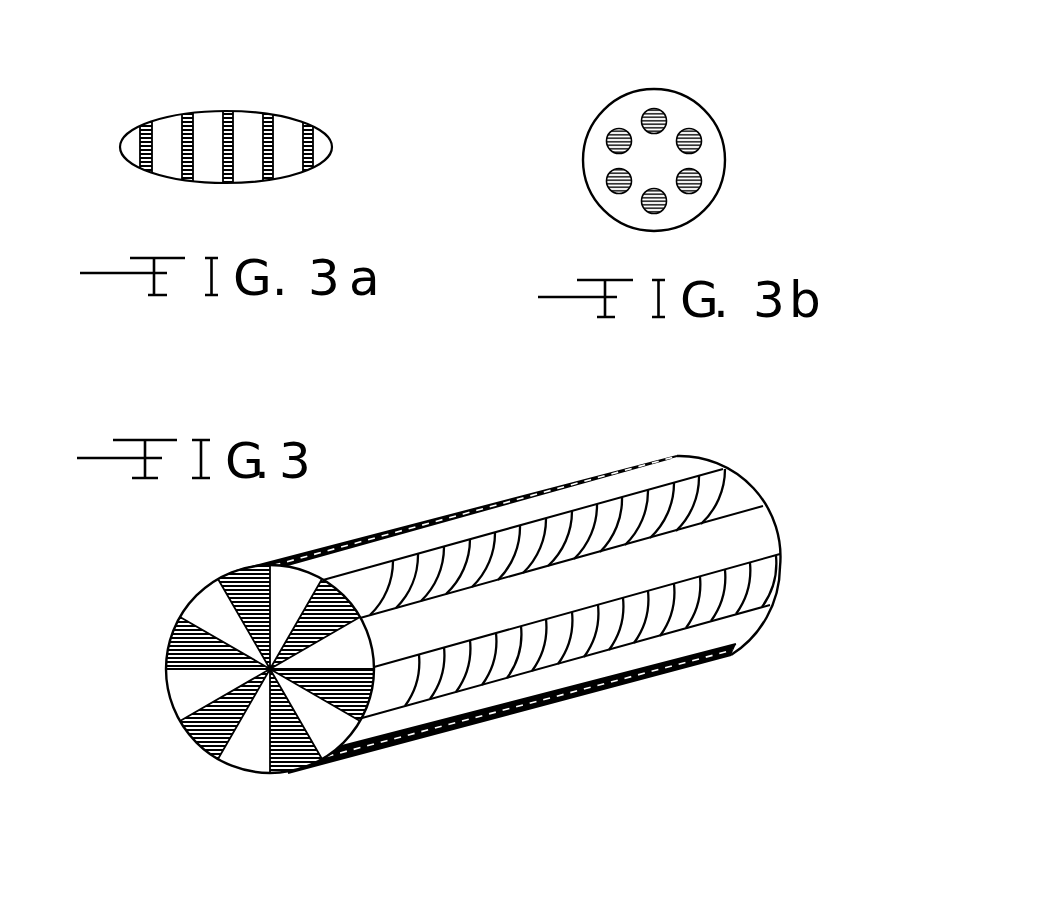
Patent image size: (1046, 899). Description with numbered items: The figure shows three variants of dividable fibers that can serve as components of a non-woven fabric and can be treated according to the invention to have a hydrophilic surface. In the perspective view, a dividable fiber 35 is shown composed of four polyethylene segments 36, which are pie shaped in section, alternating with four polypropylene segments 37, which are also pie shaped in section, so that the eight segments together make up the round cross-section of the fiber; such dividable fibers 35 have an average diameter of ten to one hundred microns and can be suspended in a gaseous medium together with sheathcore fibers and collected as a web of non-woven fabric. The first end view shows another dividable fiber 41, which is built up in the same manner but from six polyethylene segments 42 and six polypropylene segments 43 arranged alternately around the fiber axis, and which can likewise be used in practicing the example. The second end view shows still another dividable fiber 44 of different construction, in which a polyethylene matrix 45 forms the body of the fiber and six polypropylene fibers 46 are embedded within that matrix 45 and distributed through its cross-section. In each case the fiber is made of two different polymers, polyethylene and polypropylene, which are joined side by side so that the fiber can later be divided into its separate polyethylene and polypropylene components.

In FIG. 3, the dividable fiber 35 is at (442, 472).
In FIG. 3, the polyethylene segment 36 is at (203, 590).
In FIG. 3, the polypropylene segment 37 is at (292, 768).
In FIG. 3a, the dividable fiber 41 is at (192, 135).
In FIG. 3a, the polyethylene segment 42 is at (168, 162).
In FIG. 3a, the polypropylene segment 43 is at (228, 183).
In FIG. 3b, the dividable fiber 44 is at (646, 123).
In FIG. 3b, the polyethylene matrix 45 is at (600, 162).
In FIG. 3b, the polypropylene fiber 46 is at (701, 153).